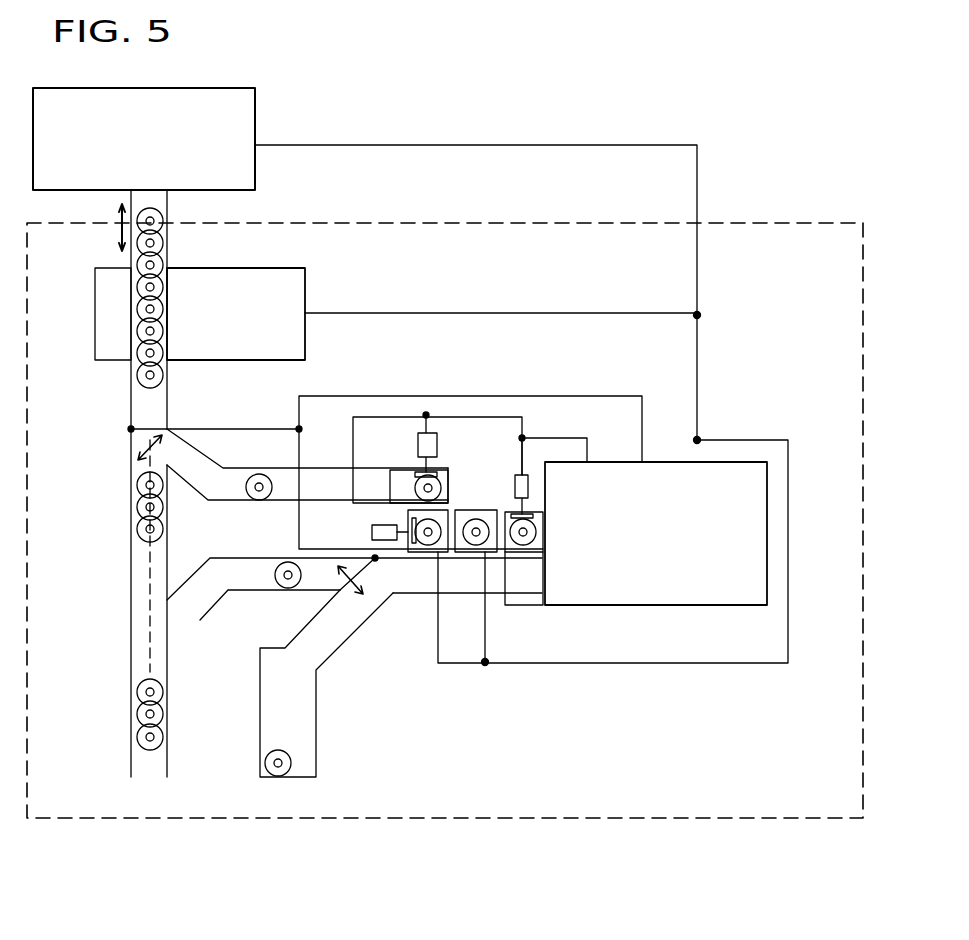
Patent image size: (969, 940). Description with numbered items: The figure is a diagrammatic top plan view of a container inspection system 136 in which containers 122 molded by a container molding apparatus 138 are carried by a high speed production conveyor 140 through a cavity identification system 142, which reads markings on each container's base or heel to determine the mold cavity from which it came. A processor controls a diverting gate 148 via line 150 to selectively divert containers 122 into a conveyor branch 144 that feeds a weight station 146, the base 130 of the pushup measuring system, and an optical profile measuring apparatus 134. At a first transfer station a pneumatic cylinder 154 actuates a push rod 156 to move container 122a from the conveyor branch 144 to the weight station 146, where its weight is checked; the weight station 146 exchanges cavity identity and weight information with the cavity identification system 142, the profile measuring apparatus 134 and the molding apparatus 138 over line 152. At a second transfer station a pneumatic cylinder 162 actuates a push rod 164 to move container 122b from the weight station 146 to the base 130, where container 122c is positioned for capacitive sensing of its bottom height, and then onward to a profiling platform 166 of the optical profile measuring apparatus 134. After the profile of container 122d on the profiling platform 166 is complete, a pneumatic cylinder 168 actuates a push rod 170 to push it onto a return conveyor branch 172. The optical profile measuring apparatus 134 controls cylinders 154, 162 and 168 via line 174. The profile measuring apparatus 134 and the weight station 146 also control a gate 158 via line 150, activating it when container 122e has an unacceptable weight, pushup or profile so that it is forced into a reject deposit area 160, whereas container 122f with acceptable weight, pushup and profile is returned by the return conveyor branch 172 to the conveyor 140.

The container inspection system 136 is at (735, 221).
The container molding apparatus 138 is at (256, 132).
The high speed production conveyor 140 is at (128, 196).
The containers 122 is at (165, 218).
The cavity identification system 142 is at (280, 265).
The diverting gate 148 is at (128, 432).
The line 152 is at (520, 145).
The line 150 is at (288, 418).
The line 174 is at (510, 400).
The conveyor branch 144 is at (345, 450).
The pneumatic cylinder 154 is at (417, 433).
The push rod 156 is at (439, 472).
The container 122a is at (418, 478).
The pneumatic cylinder 162 is at (372, 535).
The weight station 146 is at (395, 552).
The push rod 164 is at (411, 520).
The base 130 is at (475, 510).
The container 122d is at (536, 545).
The profiling platform 166 is at (518, 607).
The pneumatic cylinder 168 is at (537, 514).
The push rod 170 is at (530, 486).
The optical profile measuring apparatus 134 is at (770, 500).
The gate 158 is at (393, 596).
The container 122f is at (283, 588).
The reject deposit area 160 is at (317, 753).
The container 122e is at (265, 765).
The return conveyor branch 172 is at (413, 603).
The container 122b is at (430, 553).
The container 122c is at (470, 555).